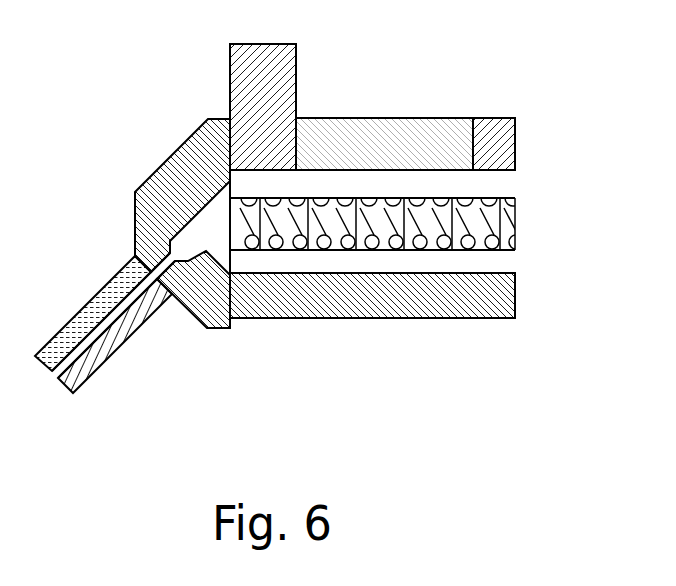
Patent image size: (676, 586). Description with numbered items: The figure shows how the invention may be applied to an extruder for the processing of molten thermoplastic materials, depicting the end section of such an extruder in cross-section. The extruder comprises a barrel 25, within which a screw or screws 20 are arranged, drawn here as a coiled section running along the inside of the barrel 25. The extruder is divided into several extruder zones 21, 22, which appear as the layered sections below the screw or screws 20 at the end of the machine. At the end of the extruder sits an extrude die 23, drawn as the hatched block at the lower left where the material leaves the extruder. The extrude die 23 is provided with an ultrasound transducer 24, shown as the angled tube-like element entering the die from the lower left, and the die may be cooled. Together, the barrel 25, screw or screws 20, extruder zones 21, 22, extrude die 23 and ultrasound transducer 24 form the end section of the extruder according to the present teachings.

The screw 20 is at (515, 218).
The extruder zone 21 is at (500, 292).
The extruder zone 22 is at (373, 318).
The extrude die 23 is at (202, 316).
The ultrasound transducer 24 is at (82, 318).
The barrel 25 is at (515, 147).